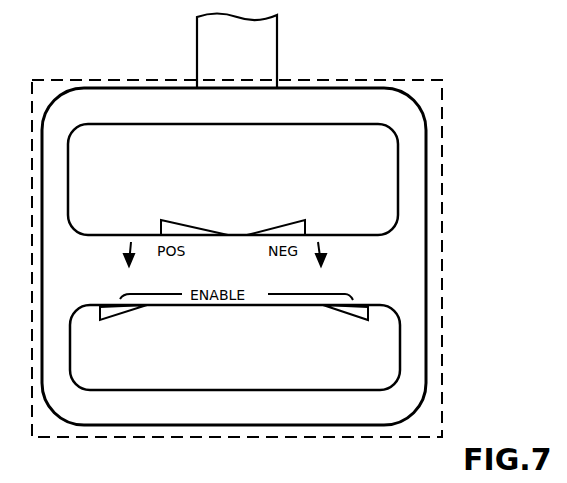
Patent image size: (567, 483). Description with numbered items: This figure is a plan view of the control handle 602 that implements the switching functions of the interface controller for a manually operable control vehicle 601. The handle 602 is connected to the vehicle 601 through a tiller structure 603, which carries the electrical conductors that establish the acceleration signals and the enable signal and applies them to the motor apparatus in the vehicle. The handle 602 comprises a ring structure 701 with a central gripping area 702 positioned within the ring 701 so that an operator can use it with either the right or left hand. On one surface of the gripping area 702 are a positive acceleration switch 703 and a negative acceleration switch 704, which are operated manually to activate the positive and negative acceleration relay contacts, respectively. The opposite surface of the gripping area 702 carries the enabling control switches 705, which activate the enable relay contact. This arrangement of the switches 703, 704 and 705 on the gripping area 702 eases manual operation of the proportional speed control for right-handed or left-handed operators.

The control vehicle 601 is at (232, 83).
The control handle 602 is at (447, 160).
The tiller structure 603 is at (205, 30).
The ring structure 701 is at (320, 103).
The central gripping area 702 is at (347, 238).
The positive acceleration switch 703 is at (190, 225).
The negative acceleration switch 704 is at (283, 225).
The enabling control switches 705 is at (117, 318).